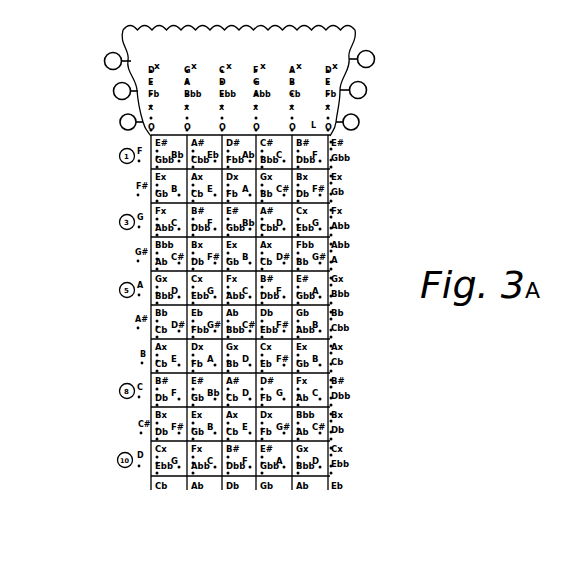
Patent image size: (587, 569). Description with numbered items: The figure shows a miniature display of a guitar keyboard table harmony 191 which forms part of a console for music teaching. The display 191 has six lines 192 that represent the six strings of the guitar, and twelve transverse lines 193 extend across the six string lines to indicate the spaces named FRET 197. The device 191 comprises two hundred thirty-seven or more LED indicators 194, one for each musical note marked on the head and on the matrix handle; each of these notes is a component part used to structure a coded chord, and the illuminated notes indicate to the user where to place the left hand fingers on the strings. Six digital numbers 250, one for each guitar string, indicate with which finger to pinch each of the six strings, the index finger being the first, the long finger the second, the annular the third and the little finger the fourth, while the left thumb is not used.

The digital numbers 250 is at (114, 91).
The guitar keyboard table harmony 191 is at (322, 177).
The lines 192 is at (292, 222).
The transverse lines 193 is at (151, 239).
The LED indicators 194 is at (153, 374).
The FRET 197 is at (137, 408).